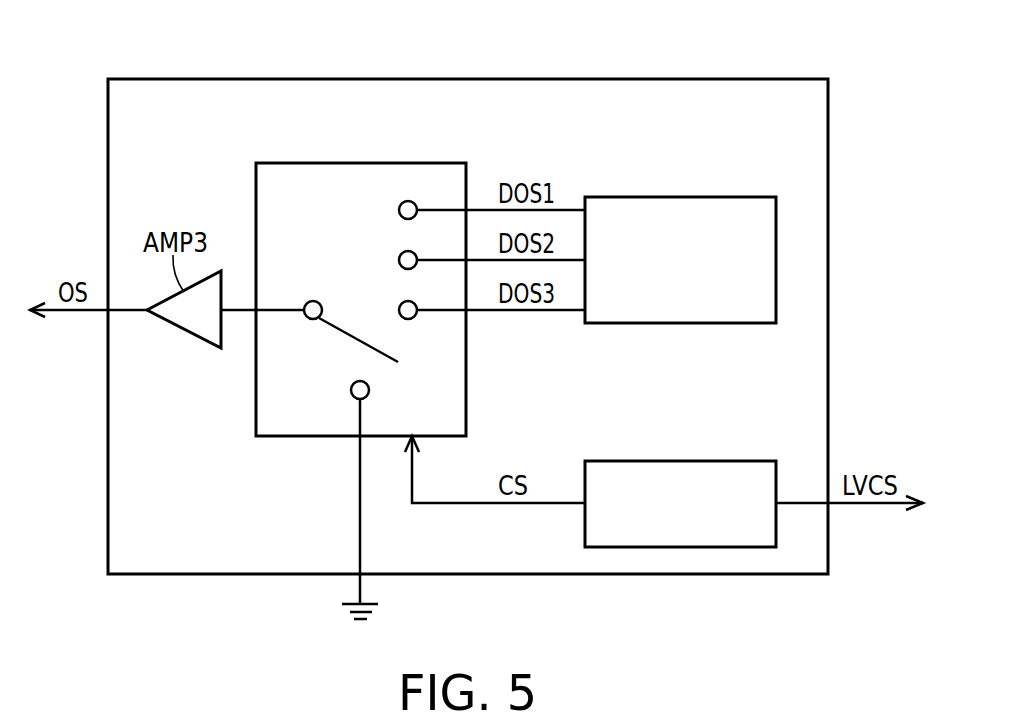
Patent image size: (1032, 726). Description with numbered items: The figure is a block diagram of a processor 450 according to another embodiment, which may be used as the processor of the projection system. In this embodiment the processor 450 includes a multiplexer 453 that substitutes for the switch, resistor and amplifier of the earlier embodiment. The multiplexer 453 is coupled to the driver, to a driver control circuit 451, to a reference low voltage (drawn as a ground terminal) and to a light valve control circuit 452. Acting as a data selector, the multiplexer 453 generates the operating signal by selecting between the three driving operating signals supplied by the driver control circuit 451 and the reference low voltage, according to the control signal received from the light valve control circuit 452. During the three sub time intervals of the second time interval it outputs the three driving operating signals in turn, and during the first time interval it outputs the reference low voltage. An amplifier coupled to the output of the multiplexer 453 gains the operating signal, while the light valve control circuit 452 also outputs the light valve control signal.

The processor 450 is at (733, 79).
The driver control circuit 451 is at (735, 197).
The light valve control circuit 452 is at (735, 461).
The multiplexer 453 is at (424, 163).